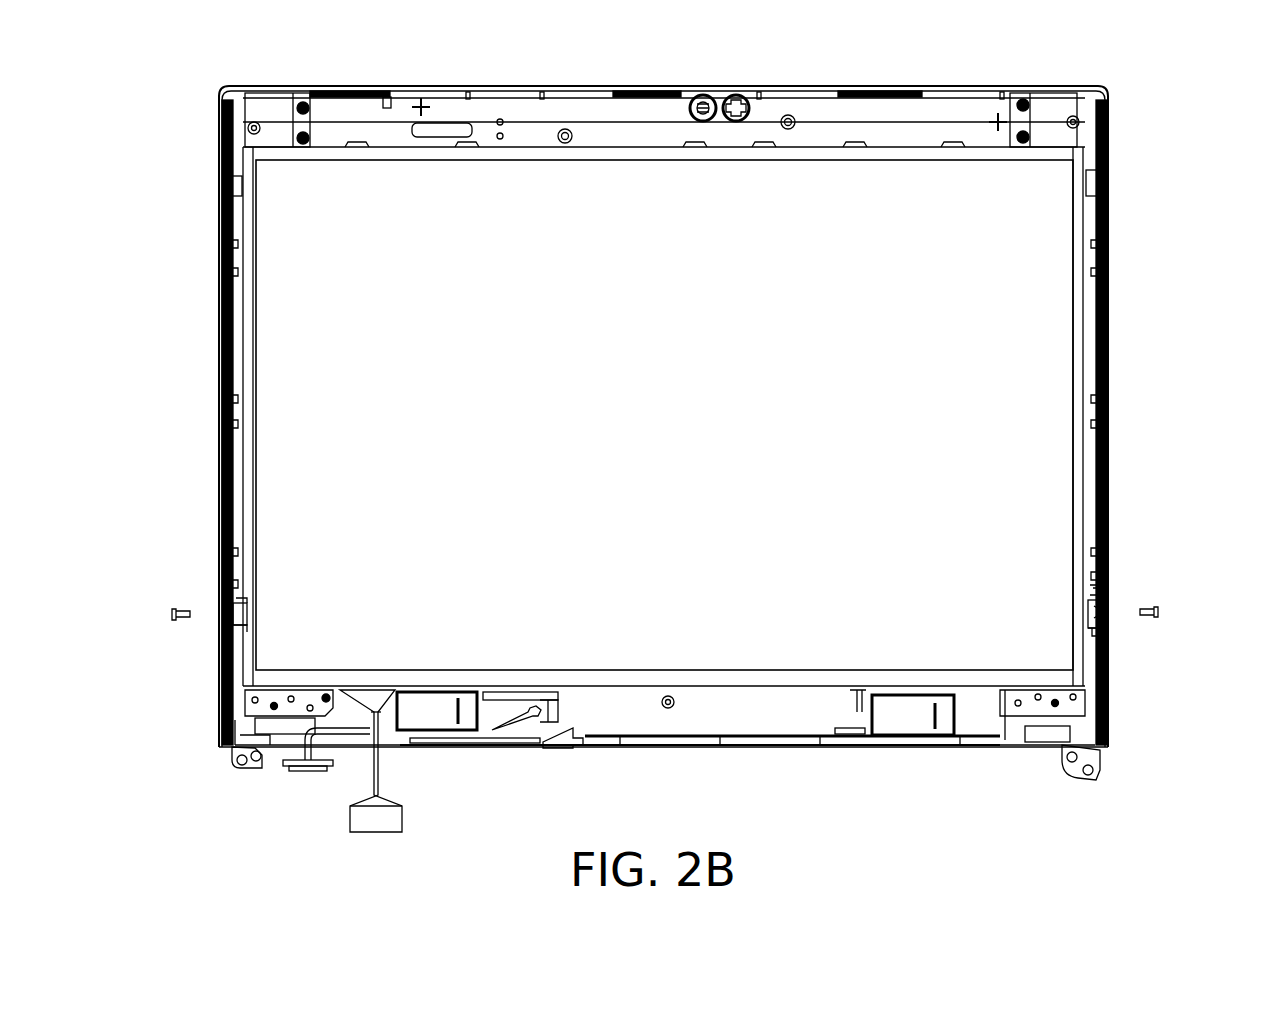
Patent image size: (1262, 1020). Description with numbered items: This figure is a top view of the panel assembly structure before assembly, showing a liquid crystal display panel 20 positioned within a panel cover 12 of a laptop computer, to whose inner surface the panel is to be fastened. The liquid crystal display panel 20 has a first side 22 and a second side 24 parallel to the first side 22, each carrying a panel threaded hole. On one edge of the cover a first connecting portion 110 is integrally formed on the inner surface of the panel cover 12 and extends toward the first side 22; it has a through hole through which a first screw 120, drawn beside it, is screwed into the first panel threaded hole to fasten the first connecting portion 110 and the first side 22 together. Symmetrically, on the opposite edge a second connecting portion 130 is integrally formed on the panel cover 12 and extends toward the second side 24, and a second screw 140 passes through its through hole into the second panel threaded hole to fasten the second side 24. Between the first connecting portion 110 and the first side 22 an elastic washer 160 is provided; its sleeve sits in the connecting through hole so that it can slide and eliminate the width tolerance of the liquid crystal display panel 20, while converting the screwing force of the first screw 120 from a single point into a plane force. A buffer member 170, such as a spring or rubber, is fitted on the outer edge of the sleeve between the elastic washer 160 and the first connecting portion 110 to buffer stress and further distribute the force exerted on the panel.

The panel cover 12 is at (663, 459).
The liquid crystal display panel 20 is at (976, 175).
The first side 22 is at (1083, 316).
The second side 24 is at (243, 316).
The first connecting portion 110 is at (1105, 612).
The first screw 120 is at (1160, 612).
The second connecting portion 130 is at (236, 597).
The second screw 140 is at (170, 610).
The elastic washer 160 is at (1105, 582).
The buffer member 170 is at (1108, 622).